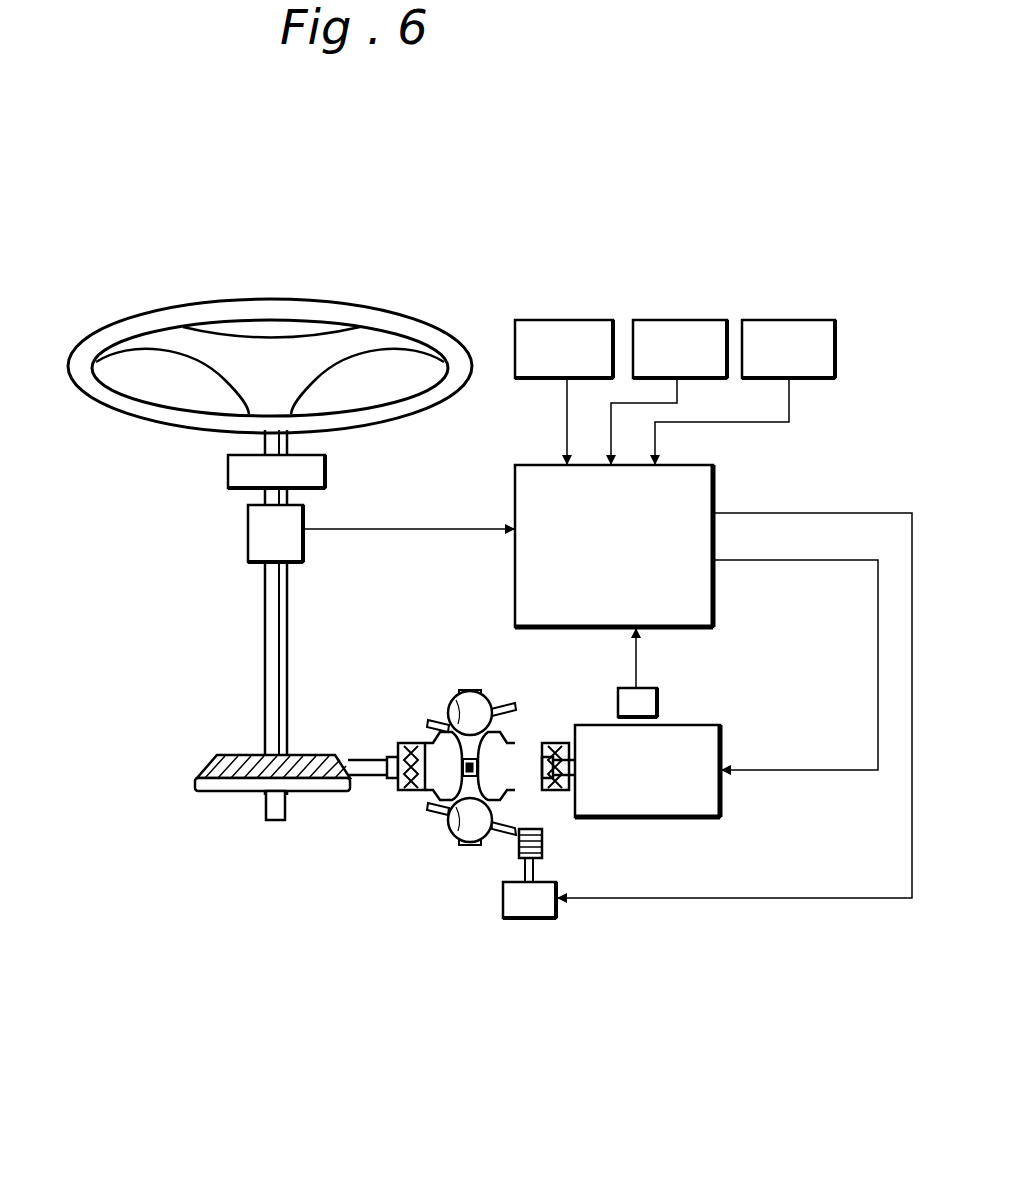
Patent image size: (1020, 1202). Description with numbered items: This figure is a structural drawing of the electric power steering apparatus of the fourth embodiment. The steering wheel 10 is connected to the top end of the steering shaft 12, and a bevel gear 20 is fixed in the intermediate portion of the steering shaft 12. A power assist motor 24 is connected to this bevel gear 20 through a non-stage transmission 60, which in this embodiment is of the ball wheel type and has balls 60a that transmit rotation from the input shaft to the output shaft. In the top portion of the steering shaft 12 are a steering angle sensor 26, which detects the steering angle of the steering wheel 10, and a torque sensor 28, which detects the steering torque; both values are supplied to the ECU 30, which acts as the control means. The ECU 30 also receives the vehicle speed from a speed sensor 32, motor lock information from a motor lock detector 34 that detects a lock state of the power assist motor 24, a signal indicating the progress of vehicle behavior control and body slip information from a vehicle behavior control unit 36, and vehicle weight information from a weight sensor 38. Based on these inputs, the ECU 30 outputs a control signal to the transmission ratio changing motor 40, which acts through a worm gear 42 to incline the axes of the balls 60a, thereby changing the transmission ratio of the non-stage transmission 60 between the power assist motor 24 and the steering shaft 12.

The steering wheel 10 is at (314, 300).
The steering shaft 12 is at (276, 640).
The bevel gear 20 is at (215, 786).
The power assist motor 24 is at (722, 790).
The steering angle sensor 26 is at (228, 465).
The torque sensor 28 is at (248, 536).
The ECU 30 is at (716, 486).
The speed sensor 32 is at (582, 318).
The motor lock detector 34 is at (660, 697).
The vehicle behavior control unit 36 is at (693, 318).
The weight sensor 38 is at (794, 318).
The transmission ratio changing motor 40 is at (523, 910).
The worm gear 42 is at (544, 840).
The non-stage transmission 60 is at (413, 678).
The balls 60a is at (451, 692).